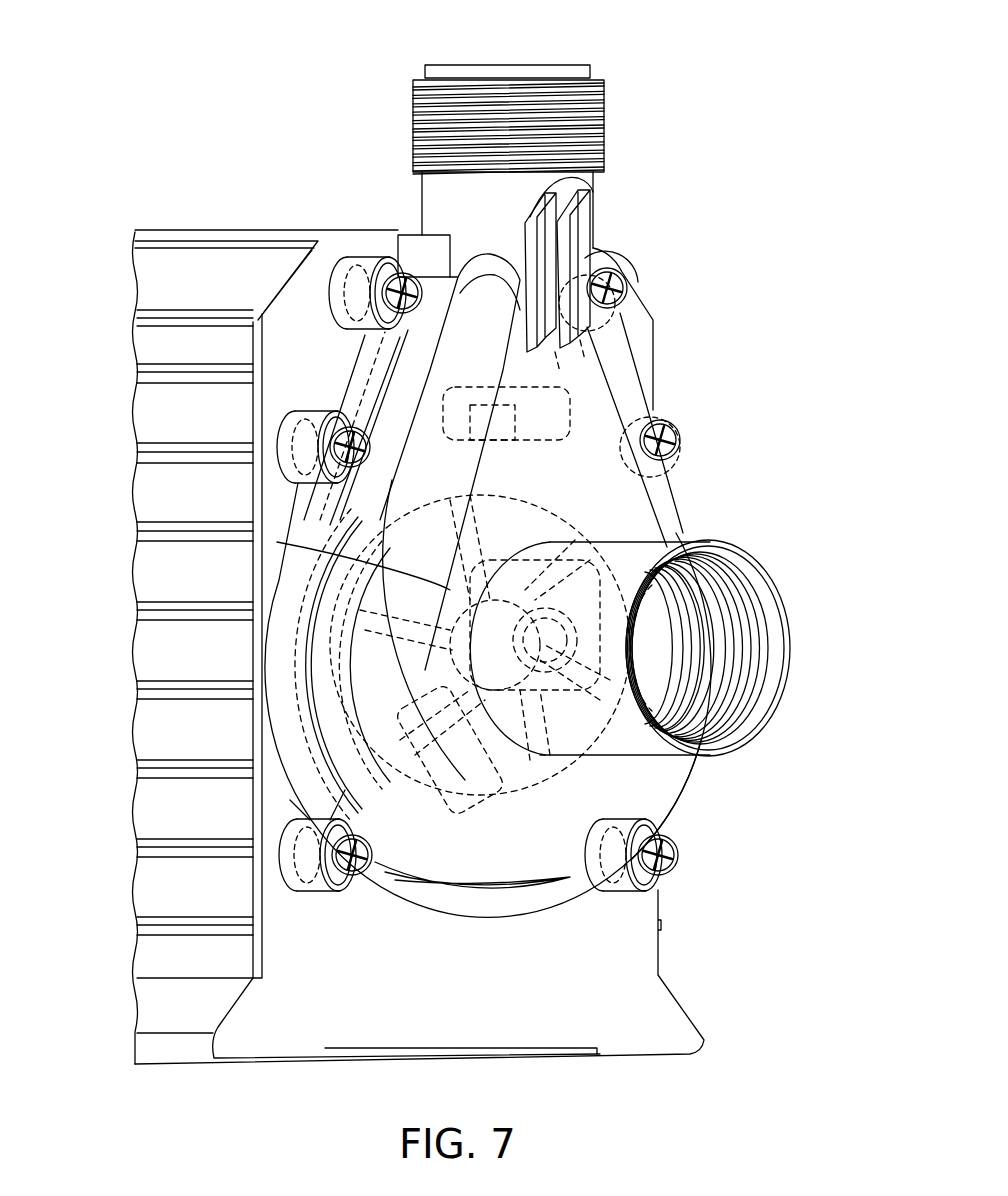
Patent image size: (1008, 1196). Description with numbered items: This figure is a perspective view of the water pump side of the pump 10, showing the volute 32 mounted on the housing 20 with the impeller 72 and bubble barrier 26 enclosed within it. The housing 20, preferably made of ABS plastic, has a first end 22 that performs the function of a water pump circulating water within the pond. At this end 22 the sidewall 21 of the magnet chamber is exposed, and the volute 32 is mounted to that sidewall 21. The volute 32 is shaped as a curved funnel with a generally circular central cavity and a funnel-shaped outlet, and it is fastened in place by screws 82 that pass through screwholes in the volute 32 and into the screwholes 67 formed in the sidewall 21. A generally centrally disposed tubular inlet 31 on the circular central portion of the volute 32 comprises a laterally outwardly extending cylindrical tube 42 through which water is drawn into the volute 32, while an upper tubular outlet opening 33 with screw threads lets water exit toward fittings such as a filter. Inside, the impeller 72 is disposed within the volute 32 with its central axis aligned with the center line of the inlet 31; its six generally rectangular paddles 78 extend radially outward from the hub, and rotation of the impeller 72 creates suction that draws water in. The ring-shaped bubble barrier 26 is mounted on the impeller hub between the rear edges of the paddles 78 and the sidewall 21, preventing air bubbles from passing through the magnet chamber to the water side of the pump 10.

The pump 10 is at (175, 222).
The housing 20 is at (160, 503).
The sidewall 21 is at (494, 1019).
The first end 22 is at (730, 325).
The bubble barrier 26 is at (525, 505).
The tubular inlet 31 is at (792, 647).
The volute 32 is at (690, 781).
The upper tubular outlet opening 33 is at (495, 67).
The cylindrical tube 42 is at (668, 540).
The screwhole 67 is at (300, 893).
The impeller 72 is at (455, 476).
The impeller paddle 78 is at (522, 770).
The screw 82 is at (668, 432).